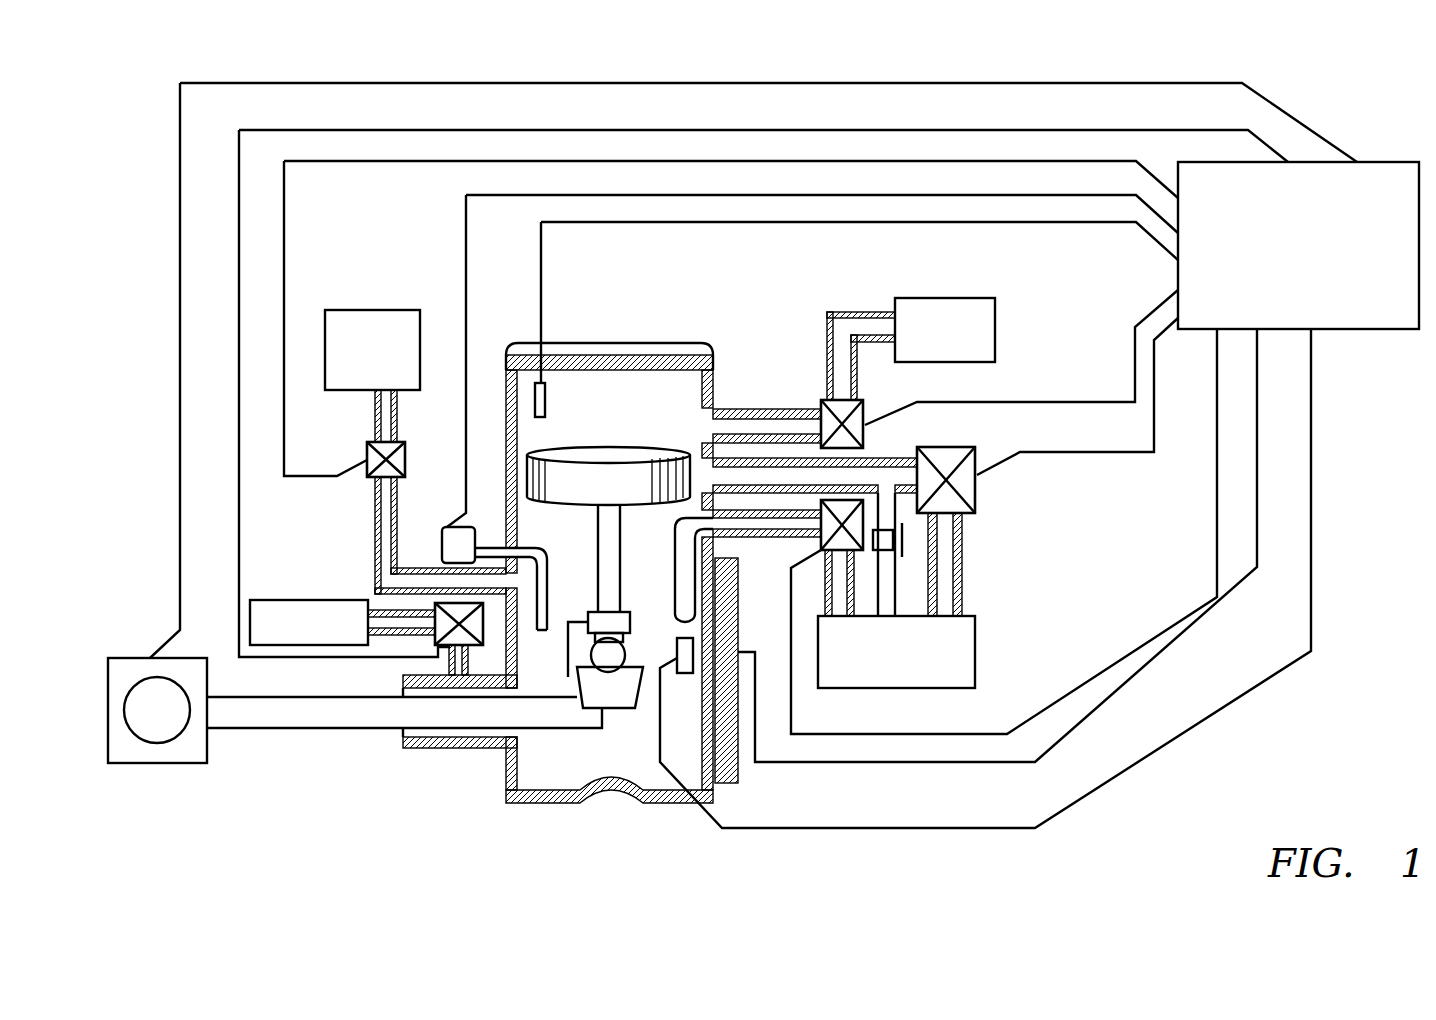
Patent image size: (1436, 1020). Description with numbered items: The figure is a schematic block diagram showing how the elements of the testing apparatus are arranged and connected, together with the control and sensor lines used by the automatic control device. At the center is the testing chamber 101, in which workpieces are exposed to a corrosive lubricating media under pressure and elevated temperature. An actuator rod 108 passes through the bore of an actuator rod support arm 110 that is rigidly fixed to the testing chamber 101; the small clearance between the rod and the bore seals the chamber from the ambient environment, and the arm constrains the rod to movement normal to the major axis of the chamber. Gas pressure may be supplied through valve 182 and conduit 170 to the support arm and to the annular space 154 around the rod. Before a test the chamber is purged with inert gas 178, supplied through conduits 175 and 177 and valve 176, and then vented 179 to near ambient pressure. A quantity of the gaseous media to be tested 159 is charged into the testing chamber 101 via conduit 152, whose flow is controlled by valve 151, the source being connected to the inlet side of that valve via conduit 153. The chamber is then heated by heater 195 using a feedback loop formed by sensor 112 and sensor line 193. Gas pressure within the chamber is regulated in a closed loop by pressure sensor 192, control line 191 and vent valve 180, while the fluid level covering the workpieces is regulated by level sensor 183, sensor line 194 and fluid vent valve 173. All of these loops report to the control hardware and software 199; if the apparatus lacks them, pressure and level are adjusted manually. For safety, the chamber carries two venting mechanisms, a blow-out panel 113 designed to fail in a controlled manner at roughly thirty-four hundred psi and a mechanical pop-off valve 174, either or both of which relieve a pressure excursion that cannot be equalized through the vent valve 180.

The testing chamber 101 is at (713, 392).
The actuator rod 108 is at (280, 727).
The actuator rod support arm 110 is at (437, 750).
The sensor 112 is at (552, 580).
The blow-out panel 113 is at (643, 815).
The valve 151 is at (408, 452).
The conduit 152 is at (396, 508).
The conduit 153 is at (373, 428).
The annular space 154 is at (403, 727).
The gaseous media to be tested 159 is at (350, 310).
The conduit 170 is at (450, 662).
The fluid vent valve 173 is at (820, 545).
The mechanical pop-off valve 174 is at (903, 537).
The conduit 175 is at (770, 408).
The valve 176 is at (866, 412).
The conduit 177 is at (852, 312).
The inert gas 178 is at (997, 318).
The vent 179 is at (980, 650).
The vent valve 180 is at (978, 455).
The valve 182 is at (450, 603).
The level sensor 183 is at (387, 610).
The control line 191 is at (545, 320).
The pressure sensor 192 is at (548, 388).
The sensor line 193 is at (466, 250).
The sensor line 194 is at (1175, 738).
The heater 195 is at (722, 788).
The control hardware and software 199 is at (1392, 160).